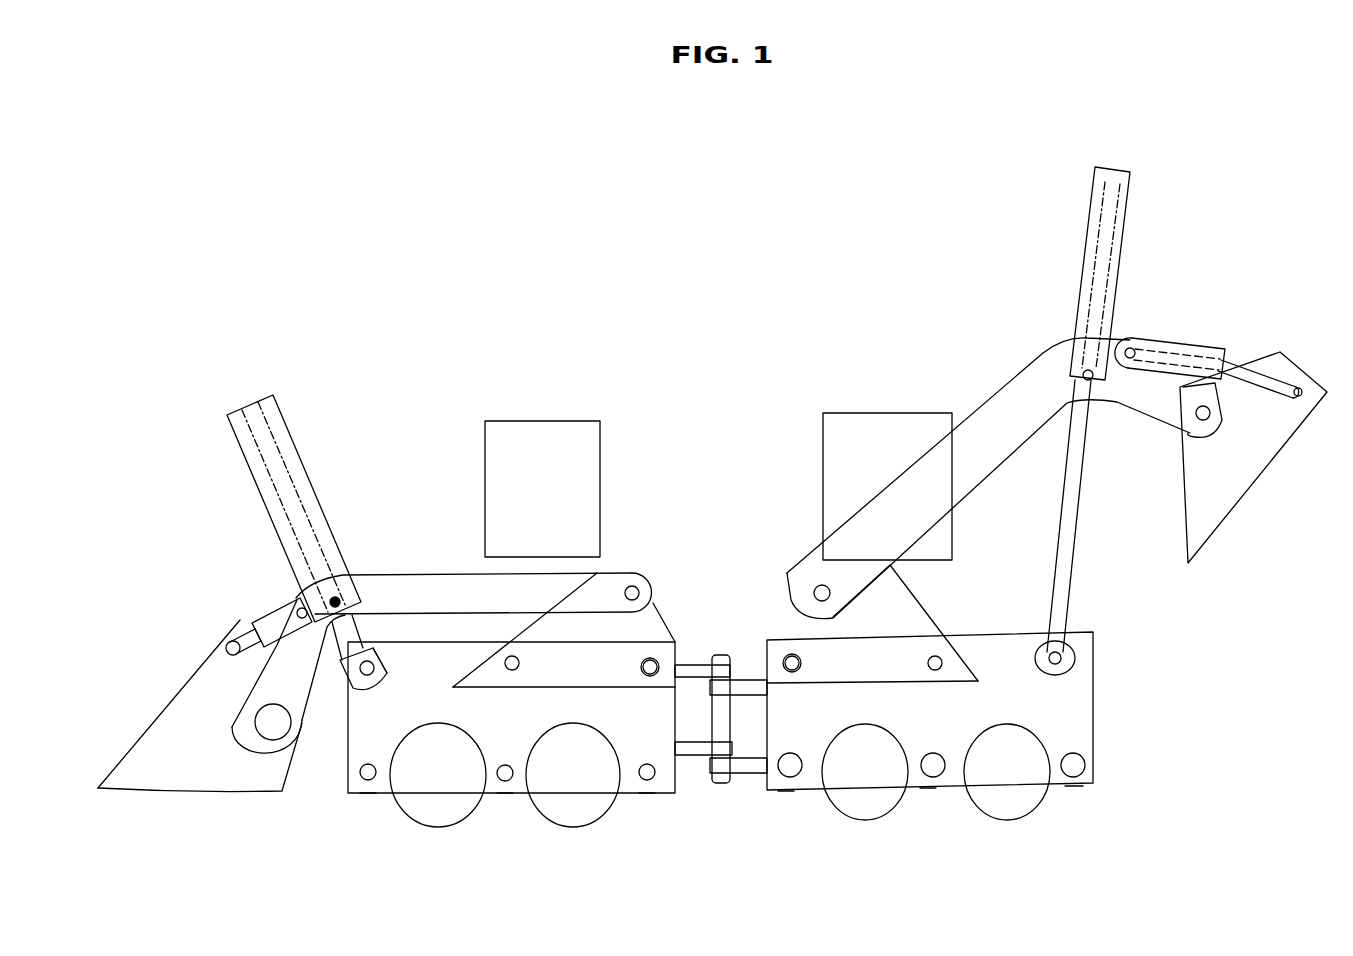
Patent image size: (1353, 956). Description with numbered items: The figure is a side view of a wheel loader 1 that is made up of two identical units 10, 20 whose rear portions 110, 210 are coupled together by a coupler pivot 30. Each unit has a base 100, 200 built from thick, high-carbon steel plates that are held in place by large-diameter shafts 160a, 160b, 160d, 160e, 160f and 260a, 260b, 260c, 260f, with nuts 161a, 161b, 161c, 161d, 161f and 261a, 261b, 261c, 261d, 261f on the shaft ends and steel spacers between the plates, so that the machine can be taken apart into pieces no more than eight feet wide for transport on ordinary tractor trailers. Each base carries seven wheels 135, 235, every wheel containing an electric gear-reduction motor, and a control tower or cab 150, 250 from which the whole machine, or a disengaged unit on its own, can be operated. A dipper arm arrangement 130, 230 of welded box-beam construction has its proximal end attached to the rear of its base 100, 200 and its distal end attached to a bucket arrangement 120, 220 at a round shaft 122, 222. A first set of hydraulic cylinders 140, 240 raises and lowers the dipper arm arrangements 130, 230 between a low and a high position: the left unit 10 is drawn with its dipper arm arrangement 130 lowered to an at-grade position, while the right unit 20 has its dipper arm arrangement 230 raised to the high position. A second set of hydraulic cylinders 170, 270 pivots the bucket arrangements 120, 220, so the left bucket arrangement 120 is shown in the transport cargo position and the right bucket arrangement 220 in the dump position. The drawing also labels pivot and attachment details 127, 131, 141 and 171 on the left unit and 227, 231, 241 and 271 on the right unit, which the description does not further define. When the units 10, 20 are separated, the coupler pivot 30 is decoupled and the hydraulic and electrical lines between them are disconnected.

The wheel loader 1 is at (728, 235).
The unit 10 is at (437, 283).
The unit 20 is at (968, 283).
The coupler pivot 30 is at (720, 653).
The base 100 is at (347, 747).
The rear portion 110 is at (683, 700).
The bucket arrangement 120 is at (182, 688).
The round shaft 122 is at (273, 722).
The bucket cylinder rod end 127 is at (230, 645).
The dipper arm arrangement 130 is at (408, 572).
The arm pivot 131 is at (632, 585).
The wheel 135 is at (437, 827).
The hydraulic cylinder 140 is at (297, 445).
The cylinder pin 141 is at (335, 597).
The control tower 150 is at (600, 440).
The shaft 160a is at (368, 765).
The shaft 160b is at (505, 765).
The shaft 160d is at (370, 665).
The shaft 160e is at (519, 663).
The shaft 160f is at (643, 664).
The nut 161a is at (372, 793).
The nut 161b is at (505, 793).
The nut 161c is at (645, 793).
The nut 161d is at (385, 675).
The nut 161f is at (650, 676).
The hydraulic cylinder 170 is at (272, 612).
The bucket cylinder pin 171 is at (300, 610).
The base 200 is at (1093, 673).
The rear portion 210 is at (760, 640).
The bucket arrangement 220 is at (1295, 435).
The round shaft 222 is at (1201, 416).
The bucket link 227 is at (1300, 386).
The dipper arm arrangement 230 is at (998, 393).
The boom pivot 231 is at (830, 594).
The wheel 235 is at (865, 822).
The hydraulic cylinder 240 is at (1082, 267).
The boom cylinder pin 241 is at (1085, 370).
The control tower 250 is at (823, 420).
The shaft 260a is at (1073, 764).
The shaft 260b is at (933, 765).
The shaft 260c is at (790, 765).
The shaft 260f is at (797, 668).
The nut 261a is at (1078, 788).
The nut 261b is at (928, 790).
The nut 261c is at (937, 655).
The nut 261d is at (1060, 650).
The nut 261f is at (800, 663).
The hydraulic cylinder 270 is at (1177, 352).
The bucket cylinder pin 271 is at (1133, 342).